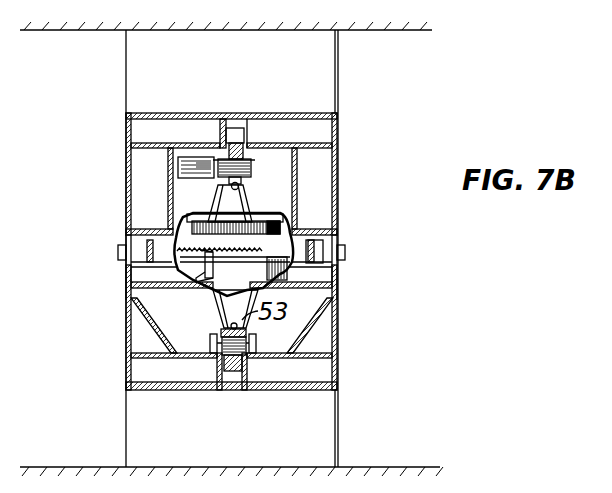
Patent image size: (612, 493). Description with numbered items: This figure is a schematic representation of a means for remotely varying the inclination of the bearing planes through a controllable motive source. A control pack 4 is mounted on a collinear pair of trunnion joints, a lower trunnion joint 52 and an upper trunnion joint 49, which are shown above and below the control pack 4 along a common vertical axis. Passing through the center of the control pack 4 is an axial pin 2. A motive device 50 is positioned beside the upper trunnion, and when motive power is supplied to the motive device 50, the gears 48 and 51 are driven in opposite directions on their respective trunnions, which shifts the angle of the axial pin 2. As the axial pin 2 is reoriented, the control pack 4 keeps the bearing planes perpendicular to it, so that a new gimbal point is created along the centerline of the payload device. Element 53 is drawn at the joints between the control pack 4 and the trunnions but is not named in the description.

The axial pin 2 is at (233, 128).
The control pack 4 is at (291, 221).
The gear 48 is at (246, 162).
The upper trunnion joint 49 is at (226, 152).
The motive device 50 is at (187, 165).
The gear 51 is at (220, 329).
The lower trunnion joint 52 is at (222, 352).
The ball joint cone 53 is at (242, 188).